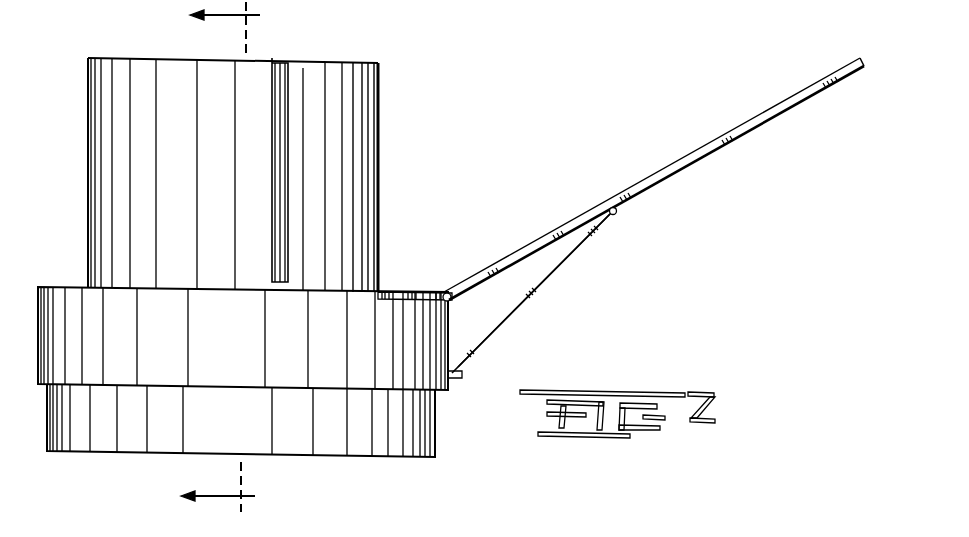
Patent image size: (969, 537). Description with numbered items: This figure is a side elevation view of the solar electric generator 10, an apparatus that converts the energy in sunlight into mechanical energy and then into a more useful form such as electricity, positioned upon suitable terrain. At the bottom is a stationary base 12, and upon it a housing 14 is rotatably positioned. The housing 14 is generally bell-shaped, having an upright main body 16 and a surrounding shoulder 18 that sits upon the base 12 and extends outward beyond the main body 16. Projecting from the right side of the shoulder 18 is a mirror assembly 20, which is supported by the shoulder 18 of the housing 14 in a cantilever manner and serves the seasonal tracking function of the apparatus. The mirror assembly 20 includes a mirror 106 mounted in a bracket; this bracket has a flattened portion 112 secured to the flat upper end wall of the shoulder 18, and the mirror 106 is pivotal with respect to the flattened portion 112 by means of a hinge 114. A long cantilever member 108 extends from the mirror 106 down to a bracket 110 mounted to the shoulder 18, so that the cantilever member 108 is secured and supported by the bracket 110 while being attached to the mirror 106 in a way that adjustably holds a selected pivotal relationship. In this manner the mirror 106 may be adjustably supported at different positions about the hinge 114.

The solar electric generator 10 is at (410, 94).
The stationary base 12 is at (357, 441).
The housing 14 is at (378, 233).
The main body 16 is at (330, 62).
The shoulder 18 is at (55, 287).
The mirror assembly 20 is at (606, 128).
The mirror 106 is at (725, 135).
The cantilever member 108 is at (567, 265).
The bracket 110 is at (462, 375).
The flattened portion 112 is at (410, 291).
The hinge 114 is at (447, 292).